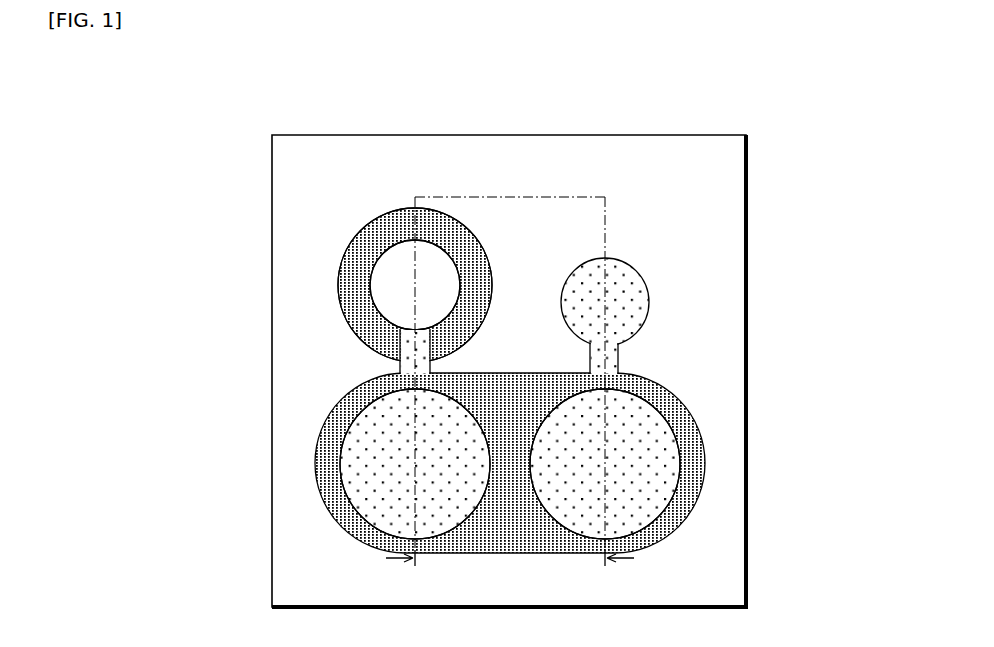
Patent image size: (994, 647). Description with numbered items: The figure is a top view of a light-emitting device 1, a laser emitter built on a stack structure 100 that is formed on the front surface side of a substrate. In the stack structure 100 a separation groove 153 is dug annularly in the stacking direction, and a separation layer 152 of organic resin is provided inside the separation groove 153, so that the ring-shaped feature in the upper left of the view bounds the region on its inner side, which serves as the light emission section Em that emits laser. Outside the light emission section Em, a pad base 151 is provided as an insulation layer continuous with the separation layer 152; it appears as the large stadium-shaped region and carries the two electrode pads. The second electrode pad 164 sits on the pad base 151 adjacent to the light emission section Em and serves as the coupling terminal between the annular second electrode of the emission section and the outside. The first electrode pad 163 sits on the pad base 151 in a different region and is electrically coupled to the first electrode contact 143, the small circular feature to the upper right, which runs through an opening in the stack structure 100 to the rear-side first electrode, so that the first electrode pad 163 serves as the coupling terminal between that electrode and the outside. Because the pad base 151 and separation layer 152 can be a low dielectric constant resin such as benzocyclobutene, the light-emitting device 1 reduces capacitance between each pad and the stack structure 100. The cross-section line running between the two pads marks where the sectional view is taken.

The light-emitting device 1 is at (509, 336).
The stack structure 100 is at (749, 187).
The first electrode contact 143 is at (632, 302).
The pad base 151 is at (673, 407).
The separation layer 152 is at (360, 297).
The separation groove 153 is at (382, 212).
The first electrode pad 163 is at (640, 463).
The second electrode pad 164 is at (377, 460).
The light emission section Em is at (440, 276).